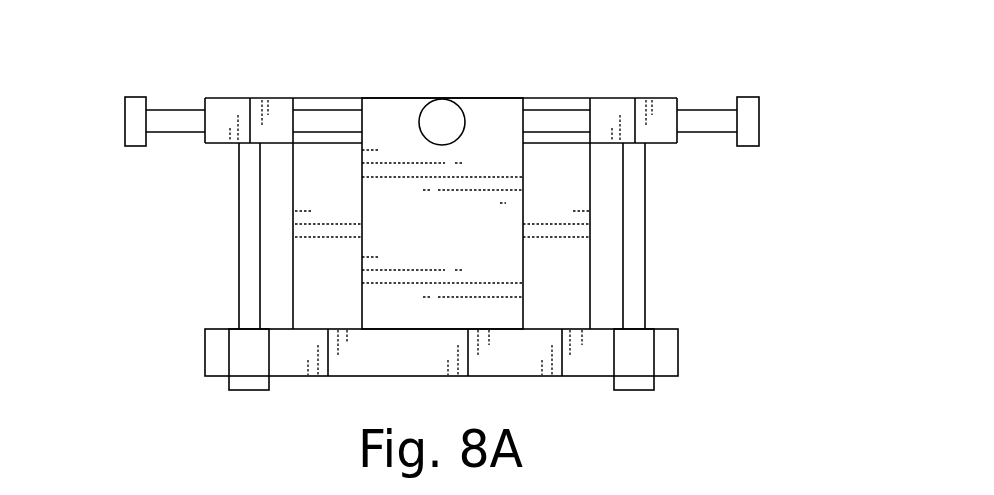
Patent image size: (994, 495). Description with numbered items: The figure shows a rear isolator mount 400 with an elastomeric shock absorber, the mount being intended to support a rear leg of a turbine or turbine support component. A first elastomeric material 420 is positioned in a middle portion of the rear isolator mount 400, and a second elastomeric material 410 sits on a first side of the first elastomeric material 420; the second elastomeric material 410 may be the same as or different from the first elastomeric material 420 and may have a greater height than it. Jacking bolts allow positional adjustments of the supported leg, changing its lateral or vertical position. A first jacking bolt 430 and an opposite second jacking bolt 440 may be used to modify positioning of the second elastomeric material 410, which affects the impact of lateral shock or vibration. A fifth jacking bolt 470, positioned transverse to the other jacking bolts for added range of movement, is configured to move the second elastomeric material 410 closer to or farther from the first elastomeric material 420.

The rear isolator mount 400 is at (725, 52).
The second elastomeric material 410 is at (497, 127).
The first elastomeric material 420 is at (335, 167).
The first jacking bolt 430 is at (125, 121).
The second jacking bolt 440 is at (759, 116).
The fifth jacking bolt 470 is at (450, 108).